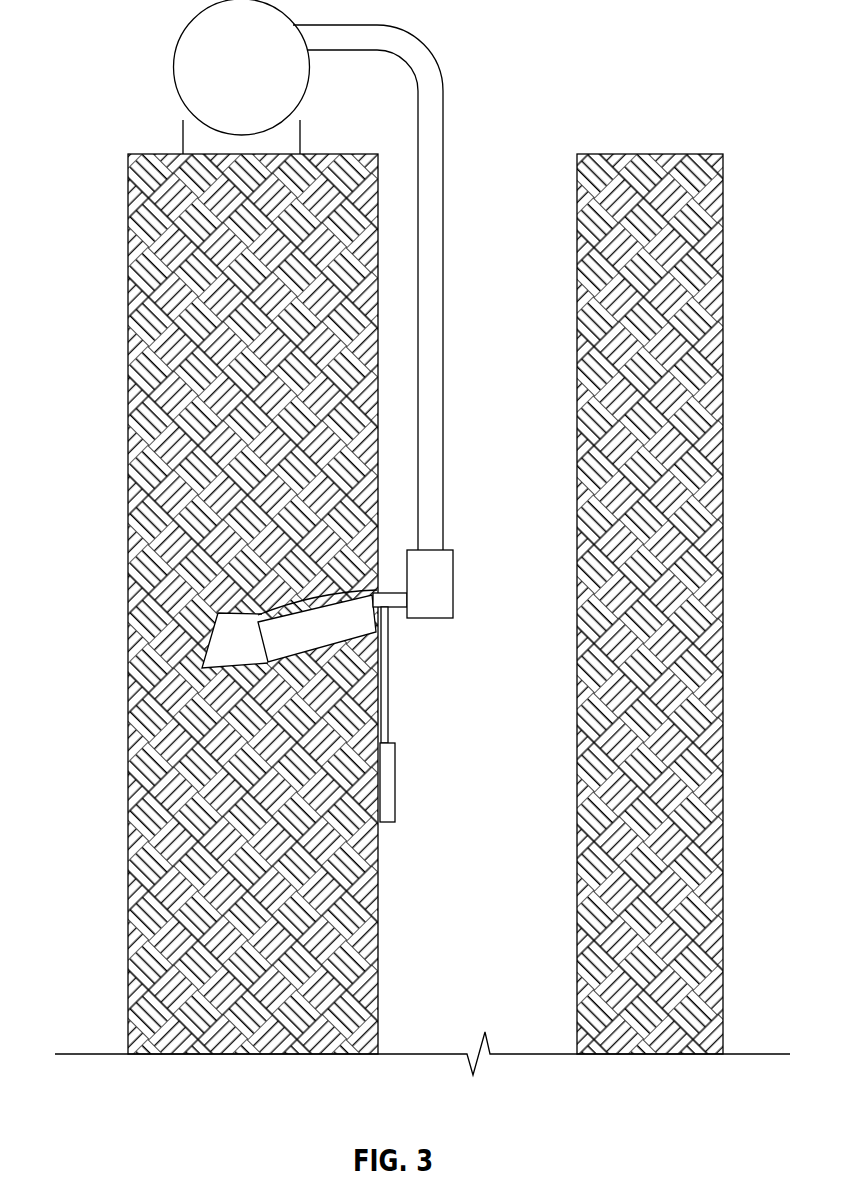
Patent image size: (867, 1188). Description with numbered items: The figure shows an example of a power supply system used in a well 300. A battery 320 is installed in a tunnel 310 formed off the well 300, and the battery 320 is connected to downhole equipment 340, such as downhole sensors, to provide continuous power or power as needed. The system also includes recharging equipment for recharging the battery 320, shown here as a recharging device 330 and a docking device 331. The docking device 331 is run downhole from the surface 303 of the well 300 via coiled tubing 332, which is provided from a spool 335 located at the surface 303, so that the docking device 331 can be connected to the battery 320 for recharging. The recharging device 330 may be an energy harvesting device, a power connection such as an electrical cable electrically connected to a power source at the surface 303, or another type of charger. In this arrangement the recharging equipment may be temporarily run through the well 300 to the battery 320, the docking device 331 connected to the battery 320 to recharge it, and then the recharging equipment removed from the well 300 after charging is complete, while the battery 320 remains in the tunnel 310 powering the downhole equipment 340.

The well 300 is at (410, 537).
The surface 303 is at (677, 153).
The tunnel 310 is at (212, 642).
The battery 320 is at (280, 638).
The recharging device 330 is at (420, 568).
The docking device 331 is at (398, 592).
The coiled tubing 332 is at (413, 34).
The spool 335 is at (265, 79).
The downhole equipment 340 is at (383, 783).